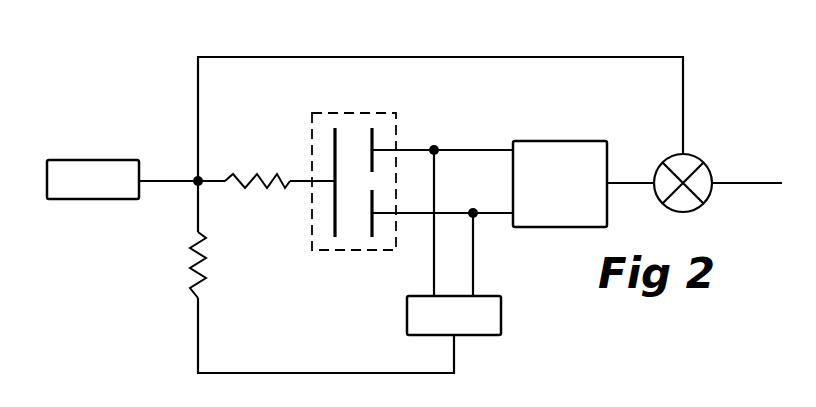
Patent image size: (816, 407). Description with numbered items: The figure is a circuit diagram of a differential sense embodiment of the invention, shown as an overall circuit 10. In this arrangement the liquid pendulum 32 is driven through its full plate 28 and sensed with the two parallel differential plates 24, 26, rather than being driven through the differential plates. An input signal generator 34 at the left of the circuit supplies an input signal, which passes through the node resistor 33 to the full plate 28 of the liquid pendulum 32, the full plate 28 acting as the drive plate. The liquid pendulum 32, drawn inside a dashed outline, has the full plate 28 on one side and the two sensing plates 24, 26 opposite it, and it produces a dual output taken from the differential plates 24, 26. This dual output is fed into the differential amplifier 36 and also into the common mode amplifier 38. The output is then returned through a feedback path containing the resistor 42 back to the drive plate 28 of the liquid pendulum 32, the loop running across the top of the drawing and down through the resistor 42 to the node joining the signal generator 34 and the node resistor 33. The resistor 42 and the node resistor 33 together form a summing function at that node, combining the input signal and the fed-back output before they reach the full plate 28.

The sensor circuit 10 is at (182, 93).
The input signal generator 34 is at (75, 160).
The node resistor 33 is at (260, 185).
The resistor 42 is at (191, 276).
The liquid pendulum 32 is at (372, 113).
The full plate 28 is at (333, 134).
The differential plate 24 is at (374, 137).
The differential plate 26 is at (372, 228).
The differential amplifier 36 is at (563, 141).
The common mode amplifier 38 is at (501, 312).